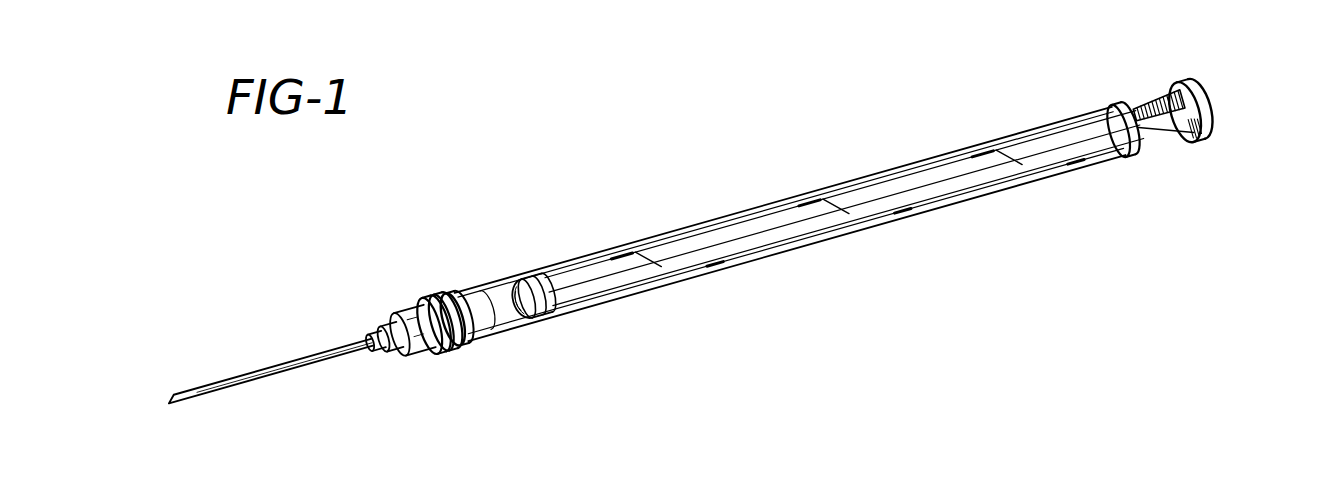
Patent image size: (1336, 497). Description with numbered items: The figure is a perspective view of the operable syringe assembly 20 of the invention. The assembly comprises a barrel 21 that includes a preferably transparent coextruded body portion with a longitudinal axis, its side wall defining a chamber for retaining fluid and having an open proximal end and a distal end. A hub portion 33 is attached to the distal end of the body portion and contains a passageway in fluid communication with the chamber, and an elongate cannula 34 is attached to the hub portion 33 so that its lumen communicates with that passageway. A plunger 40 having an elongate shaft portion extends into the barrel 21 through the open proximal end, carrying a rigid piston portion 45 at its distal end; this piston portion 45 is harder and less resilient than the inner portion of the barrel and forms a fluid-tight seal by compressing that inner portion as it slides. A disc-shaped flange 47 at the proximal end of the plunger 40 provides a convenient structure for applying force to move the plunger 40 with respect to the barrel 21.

The syringe assembly 20 is at (836, 142).
The barrel 21 is at (770, 204).
The hub portion 33 is at (404, 318).
The elongate cannula 34 is at (261, 376).
The plunger 40 is at (1148, 106).
The rigid piston portion 45 is at (530, 312).
The disc-shaped flange 47 is at (1216, 103).